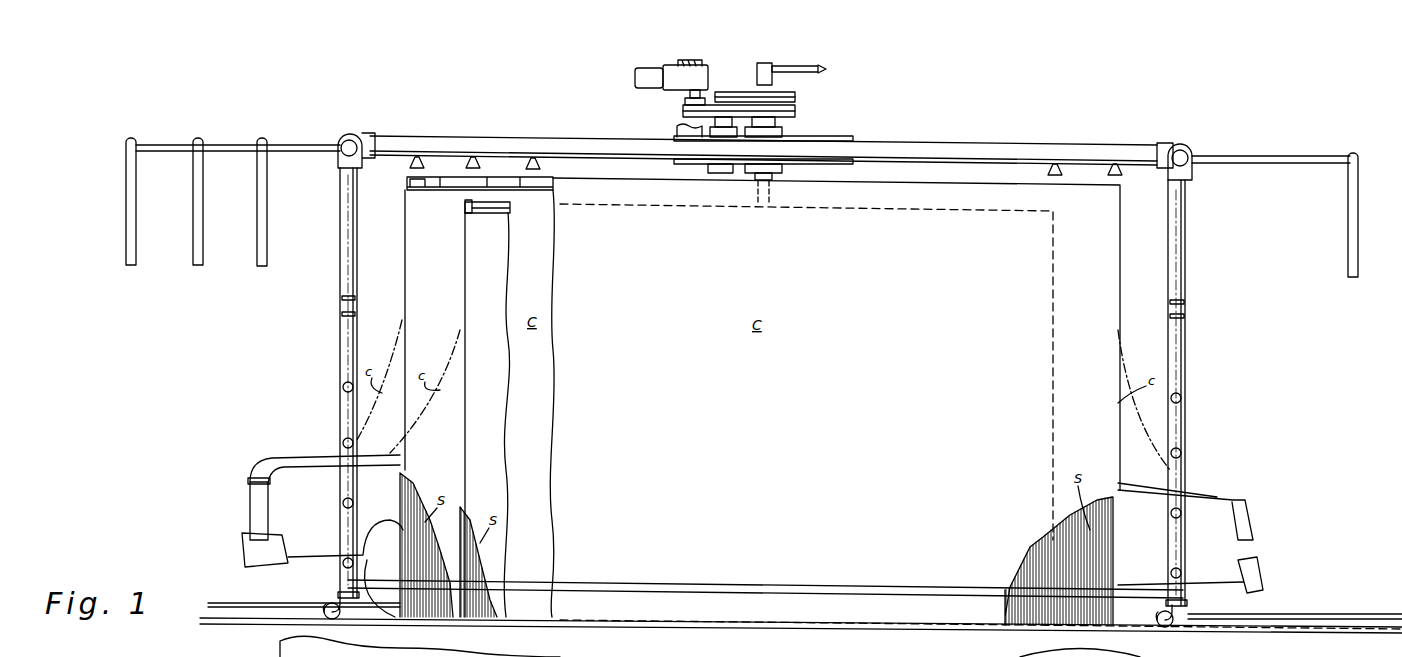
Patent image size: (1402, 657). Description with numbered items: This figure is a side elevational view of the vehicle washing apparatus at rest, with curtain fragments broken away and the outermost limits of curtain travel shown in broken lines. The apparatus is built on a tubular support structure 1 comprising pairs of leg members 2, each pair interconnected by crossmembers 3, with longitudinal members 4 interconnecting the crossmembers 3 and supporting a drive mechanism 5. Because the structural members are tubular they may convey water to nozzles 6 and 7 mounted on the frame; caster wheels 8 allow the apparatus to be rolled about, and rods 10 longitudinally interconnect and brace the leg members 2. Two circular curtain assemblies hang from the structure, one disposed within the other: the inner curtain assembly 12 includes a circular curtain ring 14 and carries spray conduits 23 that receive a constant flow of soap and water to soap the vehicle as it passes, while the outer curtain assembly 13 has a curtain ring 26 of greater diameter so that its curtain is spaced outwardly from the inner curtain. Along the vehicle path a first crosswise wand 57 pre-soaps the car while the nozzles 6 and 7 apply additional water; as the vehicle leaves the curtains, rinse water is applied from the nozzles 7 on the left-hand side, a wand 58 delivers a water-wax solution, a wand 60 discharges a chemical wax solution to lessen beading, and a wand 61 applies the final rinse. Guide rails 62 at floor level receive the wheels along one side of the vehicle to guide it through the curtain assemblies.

The tubular support structure 1 is at (917, 110).
The leg members 2 is at (342, 315).
The crossmembers 3 is at (103, 155).
The longitudinal members 4 is at (583, 152).
The drive mechanism 5 is at (730, 76).
The nozzles 6 is at (466, 166).
The nozzles 7 is at (340, 395).
The caster wheels 8 is at (330, 604).
The rods 10 is at (764, 584).
The inner curtain assembly 12 is at (455, 268).
The outer curtain assembly 13 is at (400, 294).
The curtain ring 14 is at (466, 204).
The spray conduits 23 is at (500, 213).
The curtain ring 26 is at (407, 183).
The crosswise conduit or wand 57 is at (1350, 214).
The wand 58 is at (267, 189).
The wand 60 is at (203, 219).
The wand 61 is at (136, 209).
The guide rails 62 is at (233, 603).